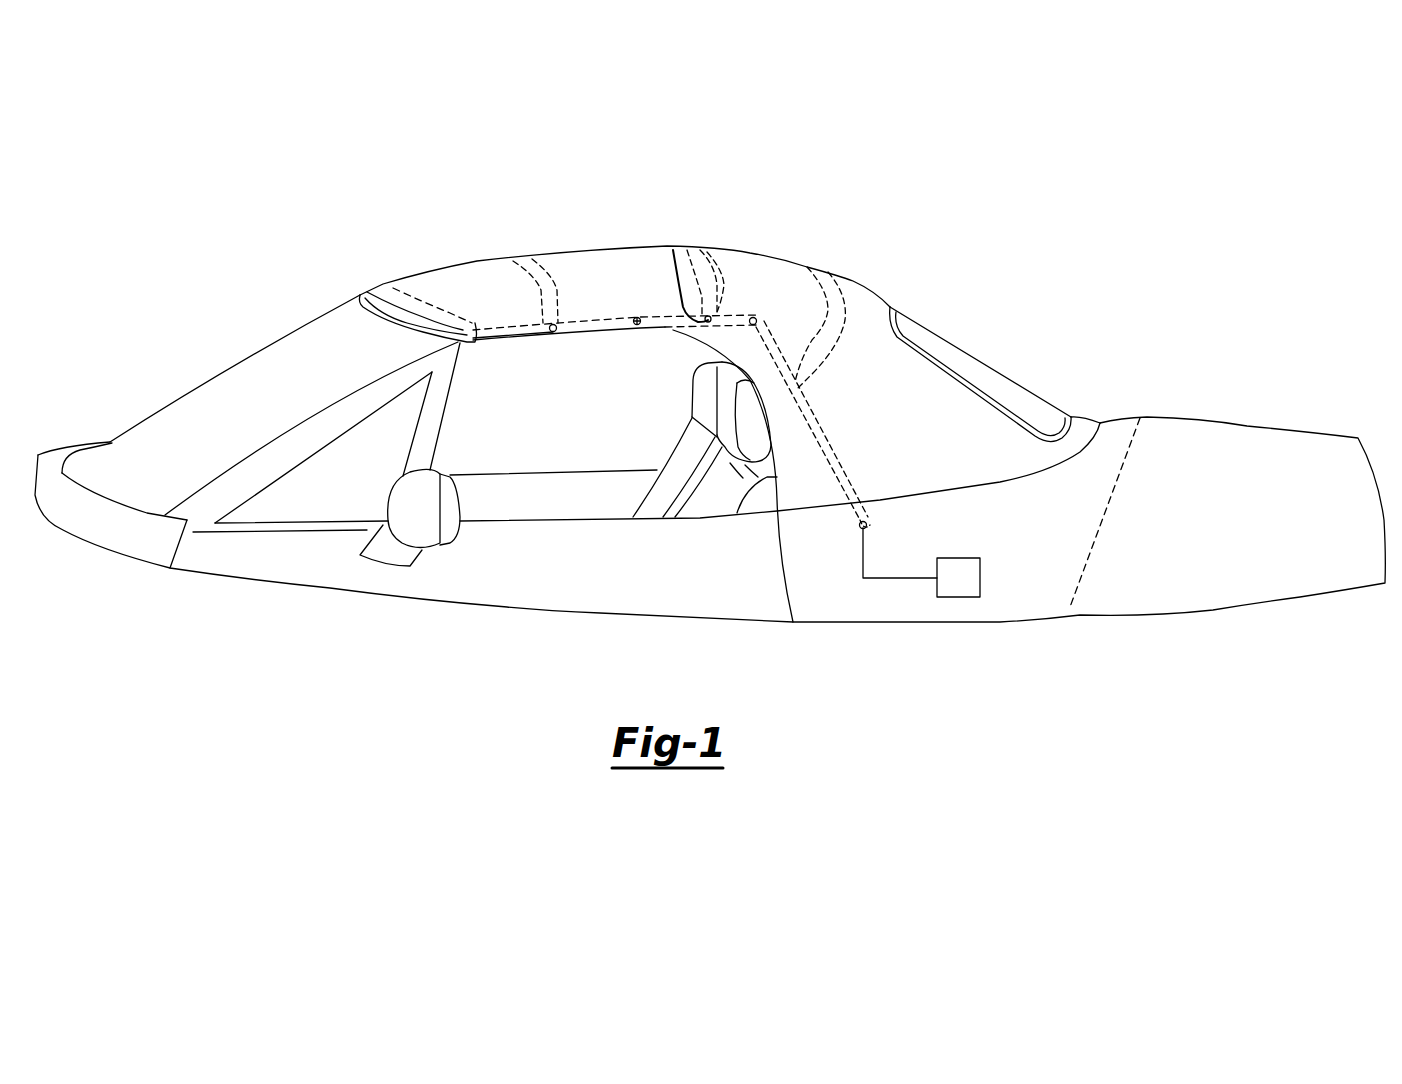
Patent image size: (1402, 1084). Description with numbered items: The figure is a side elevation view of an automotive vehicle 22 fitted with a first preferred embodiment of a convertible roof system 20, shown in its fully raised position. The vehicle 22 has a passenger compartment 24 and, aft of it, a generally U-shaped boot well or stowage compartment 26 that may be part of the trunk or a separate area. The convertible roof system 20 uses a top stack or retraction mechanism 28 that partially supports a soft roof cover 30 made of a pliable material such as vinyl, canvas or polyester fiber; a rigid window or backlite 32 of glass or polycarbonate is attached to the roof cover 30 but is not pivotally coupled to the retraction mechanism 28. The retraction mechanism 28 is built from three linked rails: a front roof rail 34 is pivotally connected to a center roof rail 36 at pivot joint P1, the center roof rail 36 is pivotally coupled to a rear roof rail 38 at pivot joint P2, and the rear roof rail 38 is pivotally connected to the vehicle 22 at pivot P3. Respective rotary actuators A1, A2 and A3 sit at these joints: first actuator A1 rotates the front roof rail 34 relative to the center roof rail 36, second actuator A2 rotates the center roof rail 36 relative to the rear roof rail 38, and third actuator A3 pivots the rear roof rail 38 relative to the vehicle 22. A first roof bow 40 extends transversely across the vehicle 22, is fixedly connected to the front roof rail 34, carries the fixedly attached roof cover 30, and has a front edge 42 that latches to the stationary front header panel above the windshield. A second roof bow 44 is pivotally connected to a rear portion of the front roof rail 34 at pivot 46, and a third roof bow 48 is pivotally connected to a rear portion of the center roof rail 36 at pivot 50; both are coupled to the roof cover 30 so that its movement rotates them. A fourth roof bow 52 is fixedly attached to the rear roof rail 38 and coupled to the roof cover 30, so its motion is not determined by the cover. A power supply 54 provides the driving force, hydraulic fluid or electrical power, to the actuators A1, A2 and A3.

The convertible roof system 20 is at (513, 143).
The automotive vehicle 22 is at (618, 600).
The passenger compartment 24 is at (557, 500).
The stowage compartment 26 is at (1047, 572).
The retraction mechanism 28 is at (910, 233).
The roof cover 30 is at (477, 267).
The backlite 32 is at (977, 363).
The front roof rail 34 is at (507, 333).
The center roof rail 36 is at (670, 323).
The rear roof rail 38 is at (830, 440).
The first roof bow 40 is at (387, 287).
The front edge 42 is at (360, 308).
The second roof bow 44 is at (560, 303).
The pivot 46 is at (554, 332).
The third roof bow 48 is at (722, 298).
The pivot 50 is at (673, 250).
The fourth roof bow 52 is at (846, 270).
The power supply 54 is at (967, 567).
The pivot joint P1 is at (638, 316).
The pivot joint P2 is at (759, 318).
The pivot P3 is at (870, 523).
The first actuator A1 is at (633, 337).
The second actuator A2 is at (745, 333).
The third actuator A3 is at (850, 532).